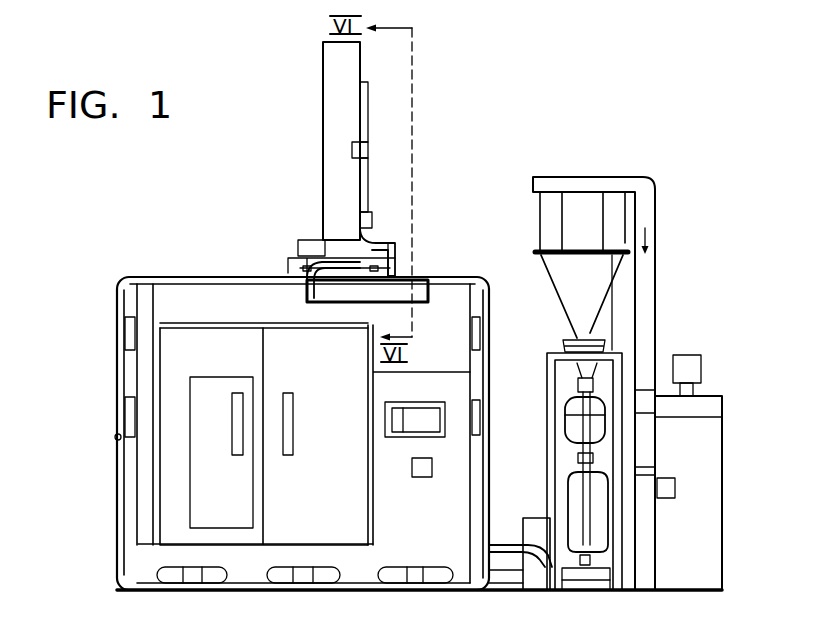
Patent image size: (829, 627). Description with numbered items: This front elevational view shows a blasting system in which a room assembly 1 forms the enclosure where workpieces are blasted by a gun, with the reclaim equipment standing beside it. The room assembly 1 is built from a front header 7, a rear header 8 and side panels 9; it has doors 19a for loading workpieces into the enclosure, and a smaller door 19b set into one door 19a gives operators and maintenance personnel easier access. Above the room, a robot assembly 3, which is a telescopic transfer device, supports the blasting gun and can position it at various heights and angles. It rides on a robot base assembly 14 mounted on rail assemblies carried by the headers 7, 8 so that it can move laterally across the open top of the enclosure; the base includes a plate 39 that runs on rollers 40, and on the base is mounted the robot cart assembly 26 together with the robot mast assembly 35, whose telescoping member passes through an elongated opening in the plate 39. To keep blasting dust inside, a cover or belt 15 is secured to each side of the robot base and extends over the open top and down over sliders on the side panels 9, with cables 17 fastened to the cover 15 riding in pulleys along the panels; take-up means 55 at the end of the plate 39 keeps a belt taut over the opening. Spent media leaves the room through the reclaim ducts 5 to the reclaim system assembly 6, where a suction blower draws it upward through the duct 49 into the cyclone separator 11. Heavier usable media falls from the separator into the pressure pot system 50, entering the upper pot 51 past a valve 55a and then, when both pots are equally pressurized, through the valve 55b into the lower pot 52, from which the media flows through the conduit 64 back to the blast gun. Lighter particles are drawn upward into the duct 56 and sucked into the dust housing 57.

The room assembly 1 is at (442, 315).
The robot assembly 3 is at (396, 198).
The reclaim ducts 5 is at (585, 578).
The reclaim system assembly 6 is at (634, 154).
The front header 7 is at (178, 302).
The rear header 8 is at (138, 497).
The side panel 9 is at (472, 367).
The cyclone separator 11 is at (553, 268).
The robot base assembly 14 is at (280, 263).
The cover or belt 15 is at (115, 337).
The cables 17 is at (120, 525).
The doors 19a is at (243, 359).
The smaller door 19b is at (245, 505).
The robot cart assembly 26 is at (320, 267).
The robot mast assembly 35 is at (335, 92).
The plate 39 is at (383, 231).
The rollers 40 is at (305, 270).
The duct 49 is at (618, 303).
The pressure pot system 50 is at (610, 440).
The upper pressure pot 51 is at (600, 410).
The lower pressure pot 52 is at (590, 490).
The take-up means 55 is at (592, 563).
The valve 55a is at (595, 378).
The valve 55b is at (597, 458).
The duct 56 is at (573, 177).
The dust housing 57 is at (705, 490).
The conduit 64 is at (507, 547).